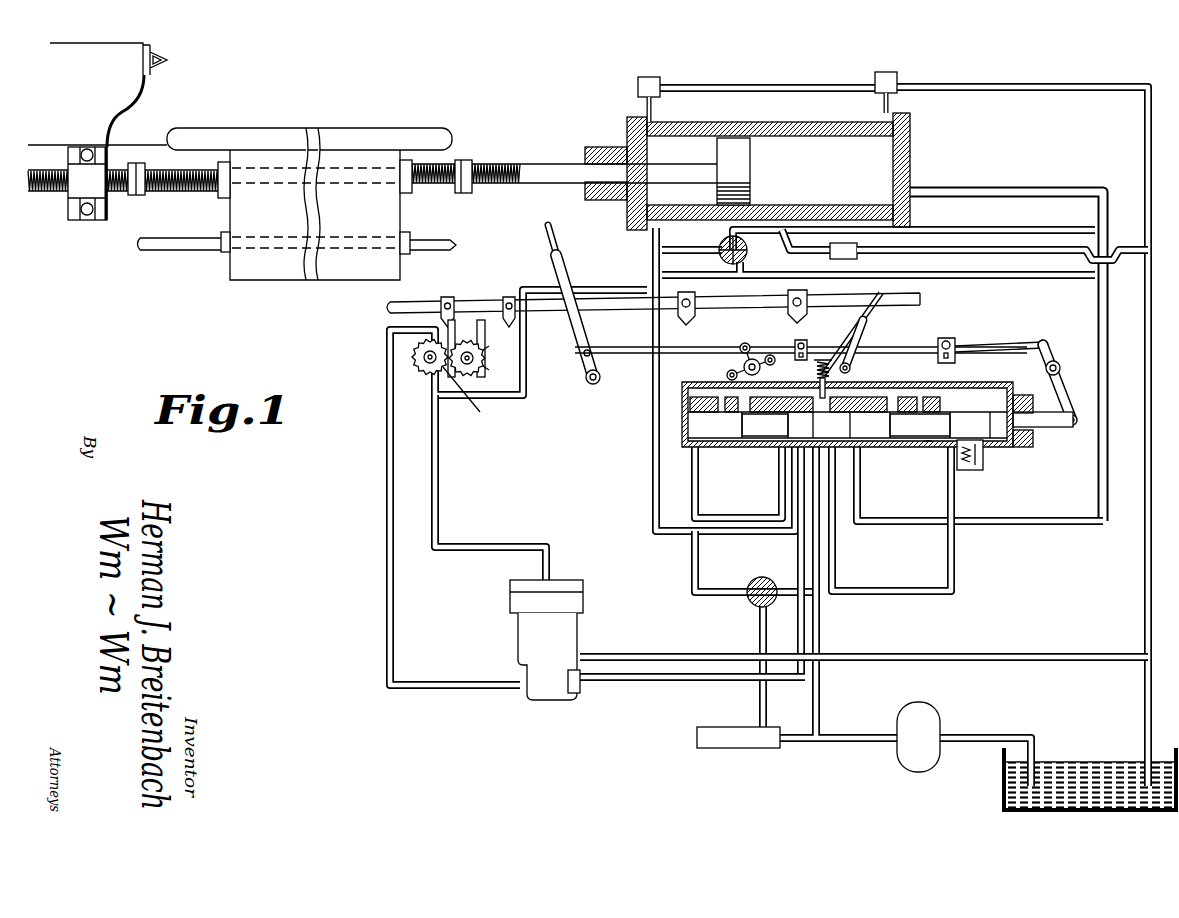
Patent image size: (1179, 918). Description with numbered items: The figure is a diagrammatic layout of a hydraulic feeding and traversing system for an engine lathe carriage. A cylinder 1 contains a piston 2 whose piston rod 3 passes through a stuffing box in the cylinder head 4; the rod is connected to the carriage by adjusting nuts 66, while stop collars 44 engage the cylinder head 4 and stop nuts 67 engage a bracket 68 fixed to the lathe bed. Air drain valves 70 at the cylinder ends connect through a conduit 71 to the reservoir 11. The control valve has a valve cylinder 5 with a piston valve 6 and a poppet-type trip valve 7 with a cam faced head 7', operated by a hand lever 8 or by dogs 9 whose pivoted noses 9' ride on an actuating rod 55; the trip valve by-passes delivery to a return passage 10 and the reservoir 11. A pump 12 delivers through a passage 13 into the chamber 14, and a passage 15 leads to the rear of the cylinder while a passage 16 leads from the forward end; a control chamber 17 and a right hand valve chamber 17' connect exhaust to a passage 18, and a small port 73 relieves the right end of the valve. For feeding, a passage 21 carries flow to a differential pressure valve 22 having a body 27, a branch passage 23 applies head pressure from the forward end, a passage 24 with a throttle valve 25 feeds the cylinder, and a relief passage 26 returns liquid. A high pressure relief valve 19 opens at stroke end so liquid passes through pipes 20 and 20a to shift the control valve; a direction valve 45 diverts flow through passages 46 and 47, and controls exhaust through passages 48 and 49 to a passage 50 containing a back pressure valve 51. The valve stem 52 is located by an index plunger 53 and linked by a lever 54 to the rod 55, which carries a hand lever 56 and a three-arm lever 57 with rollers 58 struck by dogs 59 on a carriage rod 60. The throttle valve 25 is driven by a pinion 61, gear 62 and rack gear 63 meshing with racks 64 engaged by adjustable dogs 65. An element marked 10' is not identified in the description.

The cylinder 1 is at (782, 171).
The piston 2 is at (747, 171).
The piston rod 3 is at (372, 154).
The cylinder head 4 is at (603, 186).
The valve cylinder 5 is at (920, 445).
The piston valve 6 is at (761, 442).
The trip or by-pass valve 7 is at (846, 376).
The cam faced head 7' is at (880, 286).
The hand lever 8 is at (868, 343).
The dogs 9 is at (801, 340).
The pivoted nose 9' is at (883, 334).
The return passage 10 is at (1026, 385).
The valve spool 10' is at (775, 416).
The reservoir 11 is at (1090, 760).
The pump 12 is at (898, 739).
The conduit or passage 13 is at (905, 616).
The chamber 14 is at (825, 562).
The conduit or passage 15 is at (980, 484).
The passage 16 is at (700, 379).
The control chamber 17 is at (738, 482).
The right hand valve chamber 17' is at (928, 461).
The passage 18 is at (847, 404).
The high pressure relief valve 19 is at (728, 753).
The pipe 20 is at (742, 666).
The pipe 20a is at (731, 561).
The passage 21 is at (692, 693).
The differential pressure valve 22 is at (527, 617).
The branch passage 23 is at (490, 487).
The passage 24 is at (491, 474).
The throttle valve 25 is at (475, 397).
The relief passage 26 is at (864, 641).
The body 27 is at (568, 656).
The stop collars 44 is at (479, 189).
The valve 45 is at (731, 414).
The pipe or passage 46 is at (891, 529).
The passage 47 is at (914, 226).
The passage 48 is at (692, 262).
The passage 49 is at (878, 280).
The passage 50 is at (1002, 260).
The back pressure valve 51 is at (838, 250).
The rod or stem 52 is at (1043, 435).
The spring latch or index plunger 53 is at (980, 429).
The lever 54 is at (1068, 376).
The actuating rod 55 is at (1002, 332).
The hand lever 56 is at (567, 304).
The three-arm lever 57 is at (754, 348).
The rollers 58 is at (744, 371).
The dogs 59 is at (761, 308).
The rod 60 is at (529, 285).
The pinion 61 is at (423, 373).
The gear 62 is at (484, 368).
The rack gear 63 is at (502, 352).
The racks 64 is at (470, 329).
The adjustable dogs 65 is at (471, 295).
The adjusting nuts 66 is at (312, 193).
The stop nuts 67 is at (131, 192).
The bracket 68 is at (105, 142).
The air drain valves 70 is at (788, 86).
The conduit or passage 71 is at (903, 420).
The small port 73 is at (999, 404).